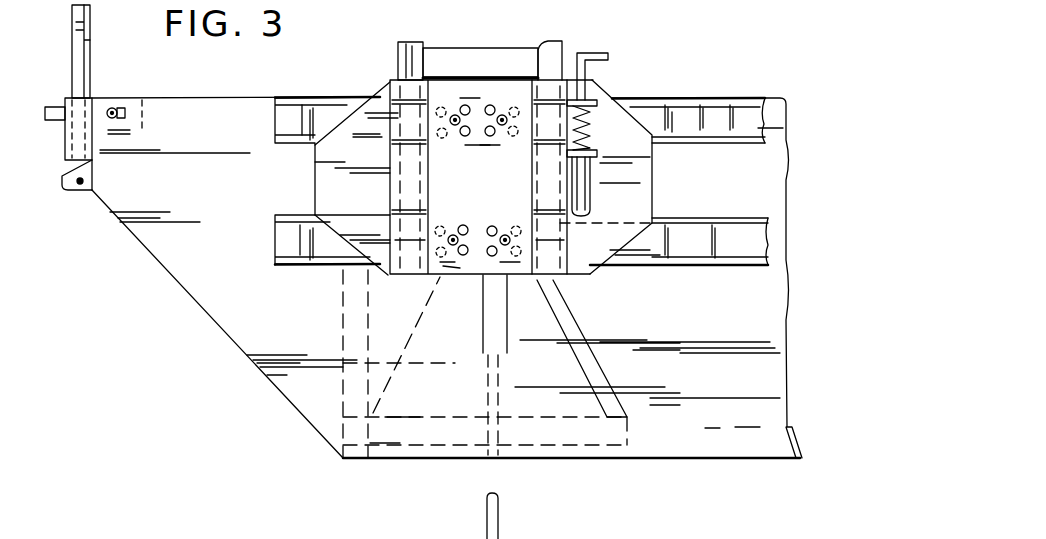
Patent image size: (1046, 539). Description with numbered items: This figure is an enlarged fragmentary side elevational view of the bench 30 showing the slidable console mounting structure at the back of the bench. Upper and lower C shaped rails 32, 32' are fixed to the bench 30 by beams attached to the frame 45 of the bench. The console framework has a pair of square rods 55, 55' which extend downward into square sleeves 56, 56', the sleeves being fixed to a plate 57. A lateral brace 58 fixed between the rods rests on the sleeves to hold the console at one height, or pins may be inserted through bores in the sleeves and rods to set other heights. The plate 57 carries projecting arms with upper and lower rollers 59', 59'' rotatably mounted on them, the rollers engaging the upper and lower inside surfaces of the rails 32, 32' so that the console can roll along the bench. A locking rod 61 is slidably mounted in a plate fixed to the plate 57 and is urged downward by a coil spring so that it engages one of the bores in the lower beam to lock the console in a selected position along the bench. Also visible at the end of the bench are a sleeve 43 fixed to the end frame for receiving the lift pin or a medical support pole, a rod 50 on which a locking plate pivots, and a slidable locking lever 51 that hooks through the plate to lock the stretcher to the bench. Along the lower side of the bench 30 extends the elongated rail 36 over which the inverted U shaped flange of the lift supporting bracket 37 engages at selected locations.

The bench 30 is at (622, 460).
The upper C shaped rail 32 is at (298, 156).
The lower C shaped rail 32' is at (313, 240).
The rail 36 is at (642, 427).
The lift supporting bracket 37 is at (587, 339).
The sleeves 43 is at (90, 97).
The front frame 45 is at (157, 259).
The rod 50 is at (80, 186).
The slidable locking lever 51 is at (117, 109).
The square rod 55 is at (386, 61).
The square rod 55' is at (576, 45).
The square sleeve 56 is at (474, 177).
The square sleeve 56' is at (531, 177).
The plate 57 is at (642, 191).
The lateral brace 58 is at (498, 58).
The upper rollers 59' is at (414, 202).
The lower rollers 59'' is at (480, 205).
The locking rod 61 is at (608, 55).